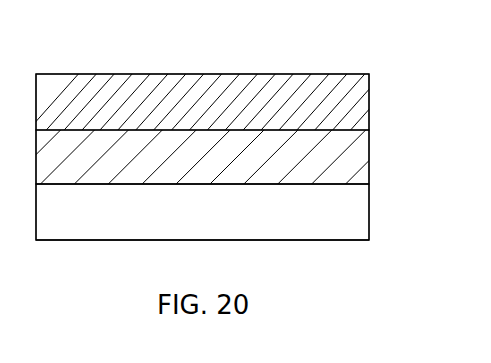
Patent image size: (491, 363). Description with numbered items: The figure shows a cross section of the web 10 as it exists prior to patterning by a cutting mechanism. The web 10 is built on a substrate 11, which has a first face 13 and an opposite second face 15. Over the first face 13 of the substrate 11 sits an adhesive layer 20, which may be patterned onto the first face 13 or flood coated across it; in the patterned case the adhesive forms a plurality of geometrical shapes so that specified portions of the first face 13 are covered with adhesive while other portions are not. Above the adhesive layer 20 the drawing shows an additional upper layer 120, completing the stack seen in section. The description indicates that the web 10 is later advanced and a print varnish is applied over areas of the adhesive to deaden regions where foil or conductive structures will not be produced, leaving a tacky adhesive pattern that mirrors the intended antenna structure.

The web 10 is at (350, 47).
The top layer 120 is at (371, 104).
The adhesive layer 20 is at (371, 157).
The first face 13 is at (372, 187).
The substrate 11 is at (372, 212).
The second face 15 is at (371, 231).